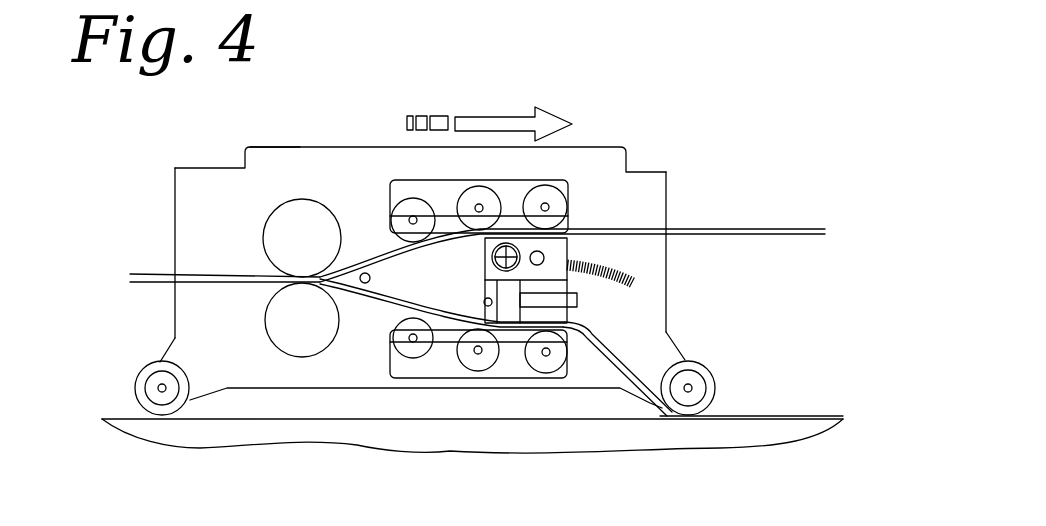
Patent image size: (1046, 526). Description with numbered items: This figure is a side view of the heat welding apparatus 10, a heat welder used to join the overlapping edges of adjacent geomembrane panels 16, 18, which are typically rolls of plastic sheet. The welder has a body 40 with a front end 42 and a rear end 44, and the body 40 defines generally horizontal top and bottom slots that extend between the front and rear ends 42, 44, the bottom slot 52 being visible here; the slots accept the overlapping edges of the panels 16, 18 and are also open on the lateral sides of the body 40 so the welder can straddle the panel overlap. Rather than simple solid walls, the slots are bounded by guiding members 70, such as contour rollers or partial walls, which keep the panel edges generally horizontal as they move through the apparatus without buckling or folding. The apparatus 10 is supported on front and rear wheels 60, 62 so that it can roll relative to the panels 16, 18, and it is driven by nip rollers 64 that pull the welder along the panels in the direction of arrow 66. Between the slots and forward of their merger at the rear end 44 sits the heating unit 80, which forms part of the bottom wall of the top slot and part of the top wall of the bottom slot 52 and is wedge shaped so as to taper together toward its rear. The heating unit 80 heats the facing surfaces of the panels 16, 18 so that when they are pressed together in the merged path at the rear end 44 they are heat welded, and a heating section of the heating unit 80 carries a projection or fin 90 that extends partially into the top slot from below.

The heat welding apparatus 10 is at (601, 142).
The geomembrane panel 16 is at (353, 255).
The geomembrane panel 18 is at (352, 293).
The body 40 is at (285, 147).
The front end 42 is at (676, 198).
The rear end 44 is at (168, 210).
The bottom slot 52 is at (578, 364).
The front wheel 60 is at (708, 365).
The rear wheel 62 is at (150, 365).
The nip rollers 64 is at (290, 200).
The arrow 66 is at (497, 120).
The guiding members 70 is at (543, 197).
The heating unit 80 is at (440, 292).
The projection or fin 90 is at (388, 257).